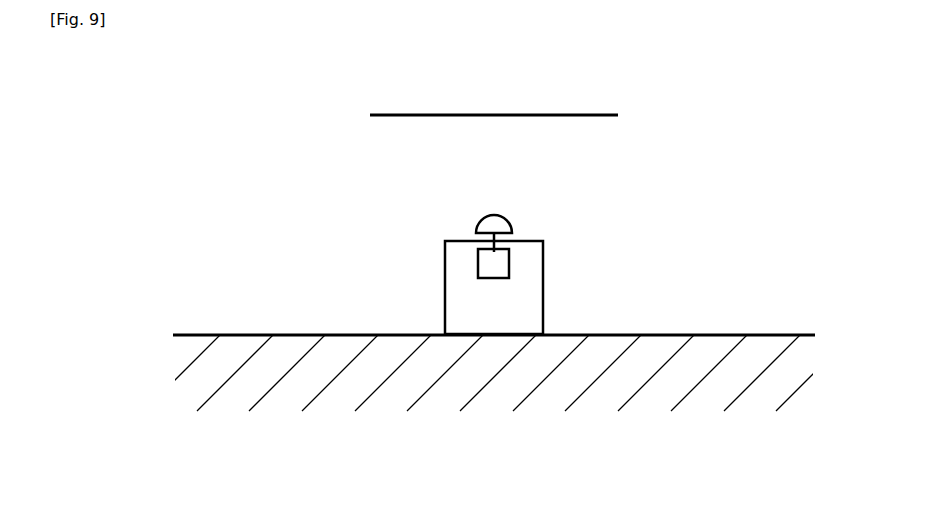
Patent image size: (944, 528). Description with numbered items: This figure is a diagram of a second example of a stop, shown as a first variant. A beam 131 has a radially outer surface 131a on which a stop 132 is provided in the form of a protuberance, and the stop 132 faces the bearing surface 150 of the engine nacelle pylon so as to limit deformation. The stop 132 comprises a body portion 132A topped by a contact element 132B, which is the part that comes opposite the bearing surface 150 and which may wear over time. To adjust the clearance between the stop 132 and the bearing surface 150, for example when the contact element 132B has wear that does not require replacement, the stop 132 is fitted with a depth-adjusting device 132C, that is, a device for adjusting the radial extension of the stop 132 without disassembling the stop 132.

The bearing surface 150 is at (396, 118).
The beam 131 is at (658, 352).
The radially outer surface 131a is at (770, 334).
The stop 132 is at (471, 245).
The housing 132A is at (543, 273).
The contact element 132B is at (494, 215).
The depth-adjusting device 132C is at (478, 265).